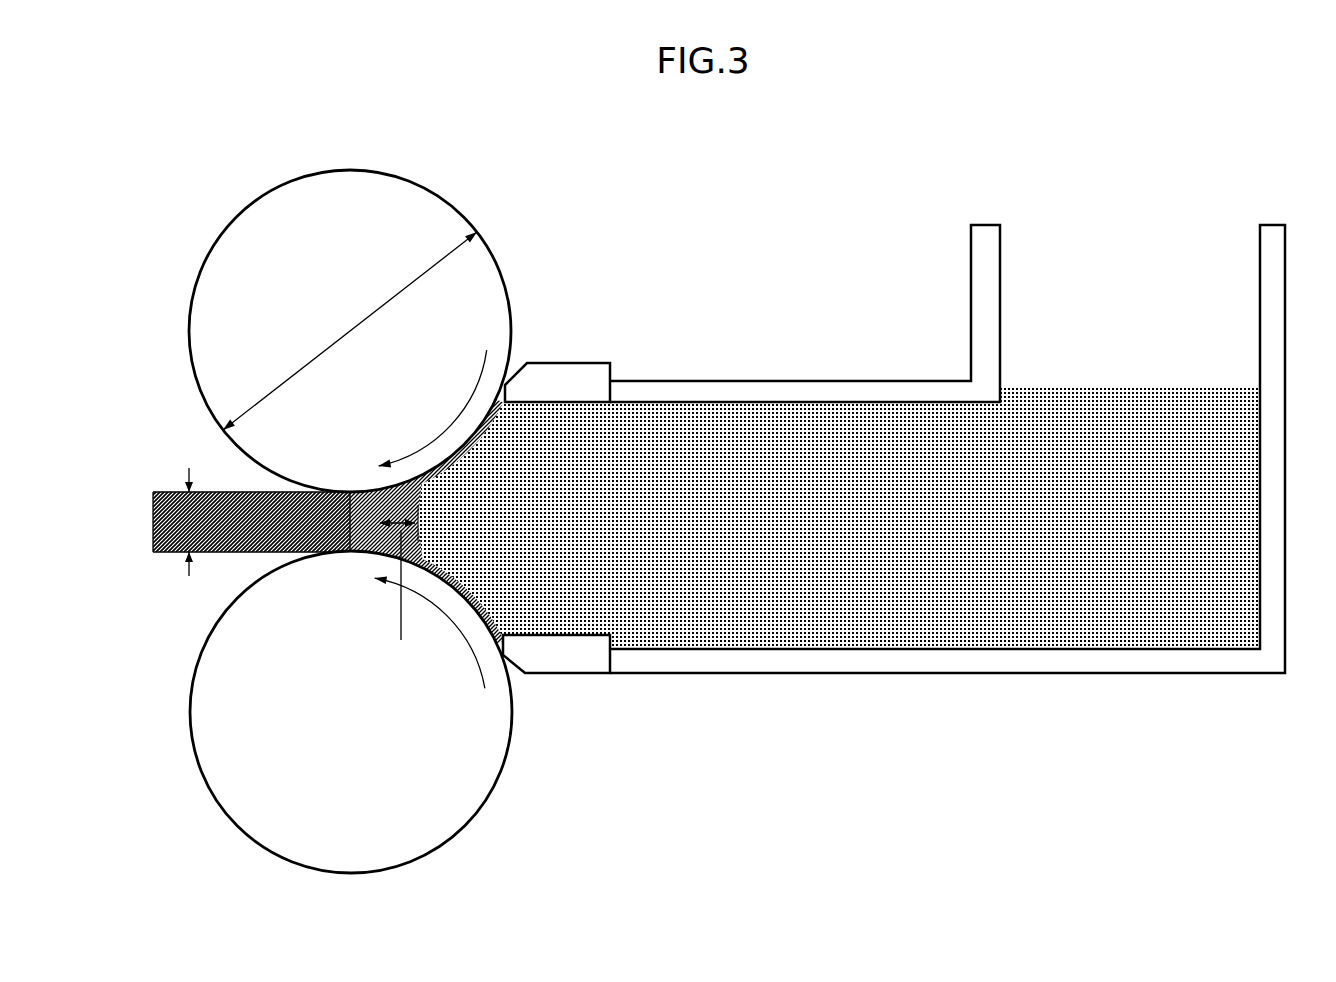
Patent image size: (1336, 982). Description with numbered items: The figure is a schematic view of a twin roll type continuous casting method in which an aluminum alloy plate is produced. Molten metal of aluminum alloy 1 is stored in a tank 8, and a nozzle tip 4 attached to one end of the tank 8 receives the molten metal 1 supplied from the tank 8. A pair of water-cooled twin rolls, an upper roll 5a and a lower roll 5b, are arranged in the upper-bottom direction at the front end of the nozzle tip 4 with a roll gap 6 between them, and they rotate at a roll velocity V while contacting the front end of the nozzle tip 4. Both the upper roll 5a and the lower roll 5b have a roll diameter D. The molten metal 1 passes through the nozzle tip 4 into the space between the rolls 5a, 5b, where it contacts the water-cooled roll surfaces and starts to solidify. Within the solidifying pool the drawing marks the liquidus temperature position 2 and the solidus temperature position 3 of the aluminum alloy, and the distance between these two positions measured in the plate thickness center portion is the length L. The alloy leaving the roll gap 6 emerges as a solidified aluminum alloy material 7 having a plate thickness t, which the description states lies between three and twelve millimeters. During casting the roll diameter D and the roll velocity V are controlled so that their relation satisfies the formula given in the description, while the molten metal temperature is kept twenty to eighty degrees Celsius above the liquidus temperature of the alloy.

The molten metal of aluminum alloy 1 is at (877, 597).
The liquidus temperature position of aluminum alloy 2 is at (485, 461).
The solidus temperature position of aluminum alloy 3 is at (444, 497).
The nozzle tip 4 is at (558, 363).
The upper roll 5a is at (497, 253).
The lower roll 5b is at (505, 770).
The roll gap 6 is at (342, 548).
The aluminum alloy material 7 is at (162, 492).
The tank 8 is at (672, 378).
The roll diameter D is at (383, 303).
The plate thickness t is at (182, 534).
The distance between the liquidus temperature position and the solidus temperature p L is at (397, 597).
The roll velocity V is at (455, 627).